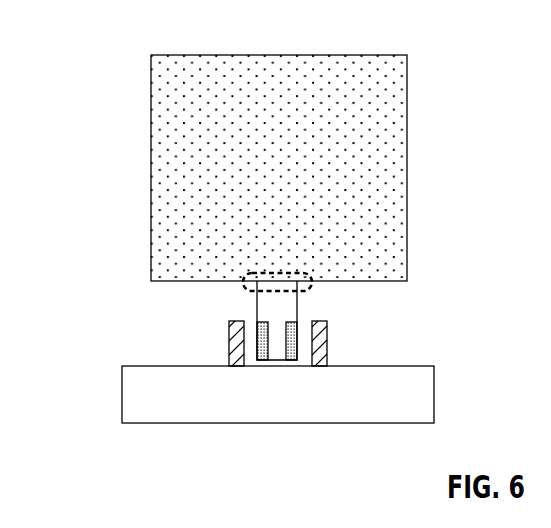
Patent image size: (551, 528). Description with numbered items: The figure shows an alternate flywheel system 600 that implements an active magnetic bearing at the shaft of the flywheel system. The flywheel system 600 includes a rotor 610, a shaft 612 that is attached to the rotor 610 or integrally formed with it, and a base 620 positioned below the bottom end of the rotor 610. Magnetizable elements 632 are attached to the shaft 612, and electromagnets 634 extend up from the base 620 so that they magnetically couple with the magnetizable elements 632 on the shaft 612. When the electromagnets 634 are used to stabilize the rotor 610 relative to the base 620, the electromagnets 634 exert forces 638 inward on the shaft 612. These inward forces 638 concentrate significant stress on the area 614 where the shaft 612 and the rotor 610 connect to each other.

The flywheel system 600 is at (95, 60).
The rotor 610 is at (192, 85).
The shaft 612 is at (257, 303).
The area 614 is at (309, 286).
The base 620 is at (162, 406).
The magnetizable elements 632 is at (264, 360).
The electromagnets 634 is at (257, 338).
The forces 638 is at (307, 362).